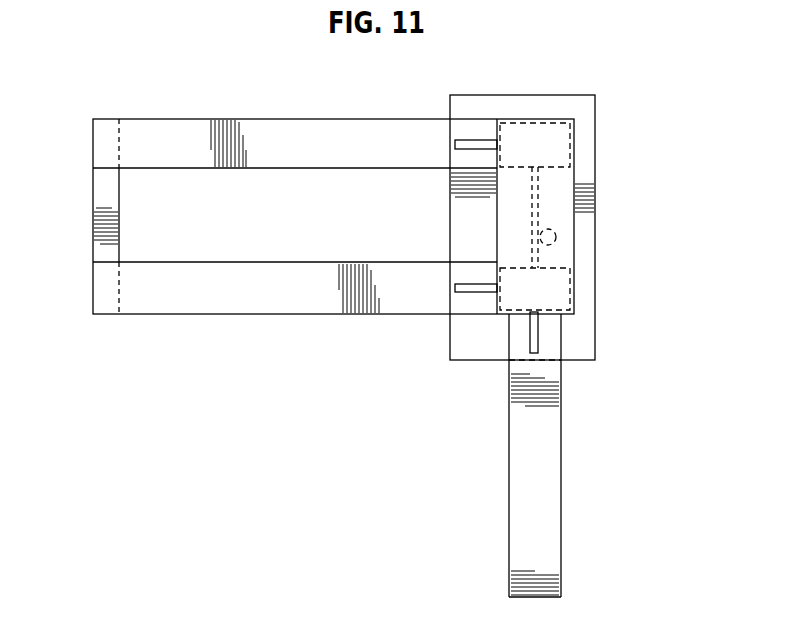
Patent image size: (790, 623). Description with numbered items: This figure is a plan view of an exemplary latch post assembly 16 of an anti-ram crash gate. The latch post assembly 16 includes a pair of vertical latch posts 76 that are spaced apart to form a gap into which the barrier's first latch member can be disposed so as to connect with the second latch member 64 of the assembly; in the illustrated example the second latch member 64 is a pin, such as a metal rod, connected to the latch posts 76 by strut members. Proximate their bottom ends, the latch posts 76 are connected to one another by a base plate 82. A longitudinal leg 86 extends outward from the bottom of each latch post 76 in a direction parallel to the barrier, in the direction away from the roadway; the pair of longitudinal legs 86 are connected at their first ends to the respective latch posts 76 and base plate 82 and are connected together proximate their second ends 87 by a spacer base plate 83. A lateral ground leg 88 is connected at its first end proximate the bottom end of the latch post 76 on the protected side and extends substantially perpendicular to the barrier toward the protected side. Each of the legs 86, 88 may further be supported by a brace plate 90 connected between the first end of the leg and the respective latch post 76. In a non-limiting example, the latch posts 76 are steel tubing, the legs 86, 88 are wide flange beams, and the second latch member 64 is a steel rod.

The latch post assembly 16 is at (650, 119).
The second latch member 64 is at (557, 232).
The latch posts 76 is at (570, 138).
The base plate 82 is at (589, 161).
The spacer base plate 83 is at (100, 223).
The longitudinal leg 86 is at (225, 137).
The second ends 87 is at (132, 295).
The lateral ground leg 88 is at (548, 488).
The brace plate 90 is at (480, 140).